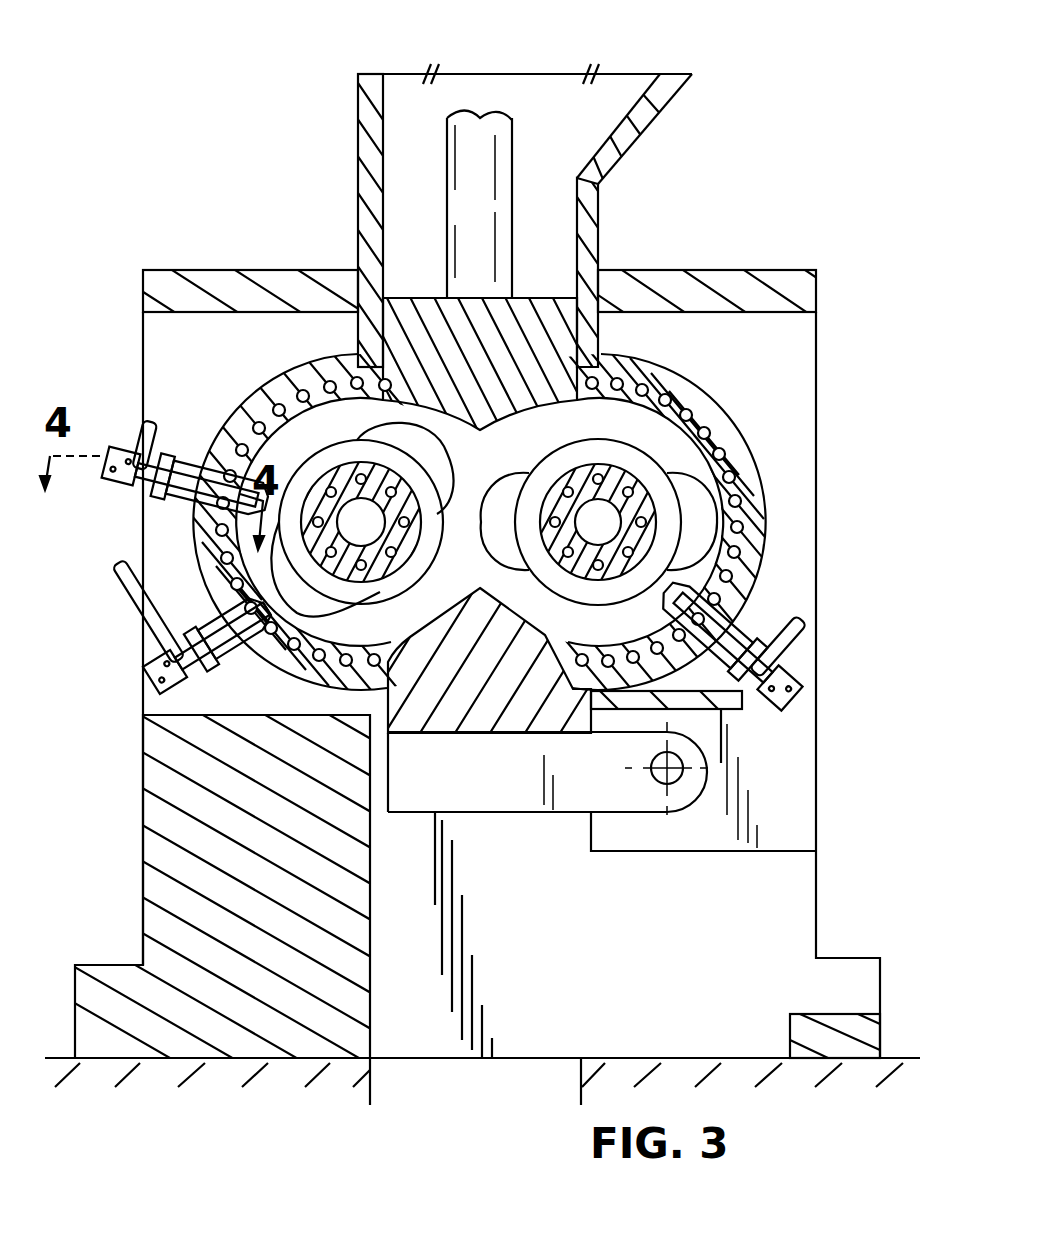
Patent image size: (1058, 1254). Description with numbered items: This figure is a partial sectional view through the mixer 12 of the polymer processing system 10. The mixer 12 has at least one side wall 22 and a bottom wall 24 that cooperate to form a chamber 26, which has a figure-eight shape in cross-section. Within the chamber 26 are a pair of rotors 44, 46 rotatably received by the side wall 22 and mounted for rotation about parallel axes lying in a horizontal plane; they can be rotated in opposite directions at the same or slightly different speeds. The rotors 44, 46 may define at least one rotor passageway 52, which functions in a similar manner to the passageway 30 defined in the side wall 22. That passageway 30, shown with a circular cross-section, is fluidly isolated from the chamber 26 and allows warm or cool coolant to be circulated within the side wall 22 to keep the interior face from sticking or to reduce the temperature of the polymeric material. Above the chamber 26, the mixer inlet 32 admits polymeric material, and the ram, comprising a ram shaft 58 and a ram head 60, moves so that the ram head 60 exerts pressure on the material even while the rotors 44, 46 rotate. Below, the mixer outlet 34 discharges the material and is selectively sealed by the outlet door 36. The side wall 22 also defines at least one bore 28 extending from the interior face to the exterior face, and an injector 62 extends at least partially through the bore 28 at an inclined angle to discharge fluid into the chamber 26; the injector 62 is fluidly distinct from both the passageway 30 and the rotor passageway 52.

The polymer processing system 10 is at (163, 122).
The mixer 12 is at (770, 252).
The side wall 22 is at (758, 437).
The bottom wall 24 is at (200, 803).
The chamber 26 is at (738, 400).
The bore 28 is at (216, 492).
The passageway 30 is at (316, 388).
The mixer inlet 32 is at (405, 287).
The mixer outlet 34 is at (390, 655).
The outlet door 36 is at (503, 703).
The rotor 44 is at (345, 452).
The rotor 46 is at (618, 450).
The rotor passageway 52 is at (632, 490).
The ram shaft 58 is at (463, 140).
The ram head 60 is at (532, 333).
The injector 62 is at (110, 484).